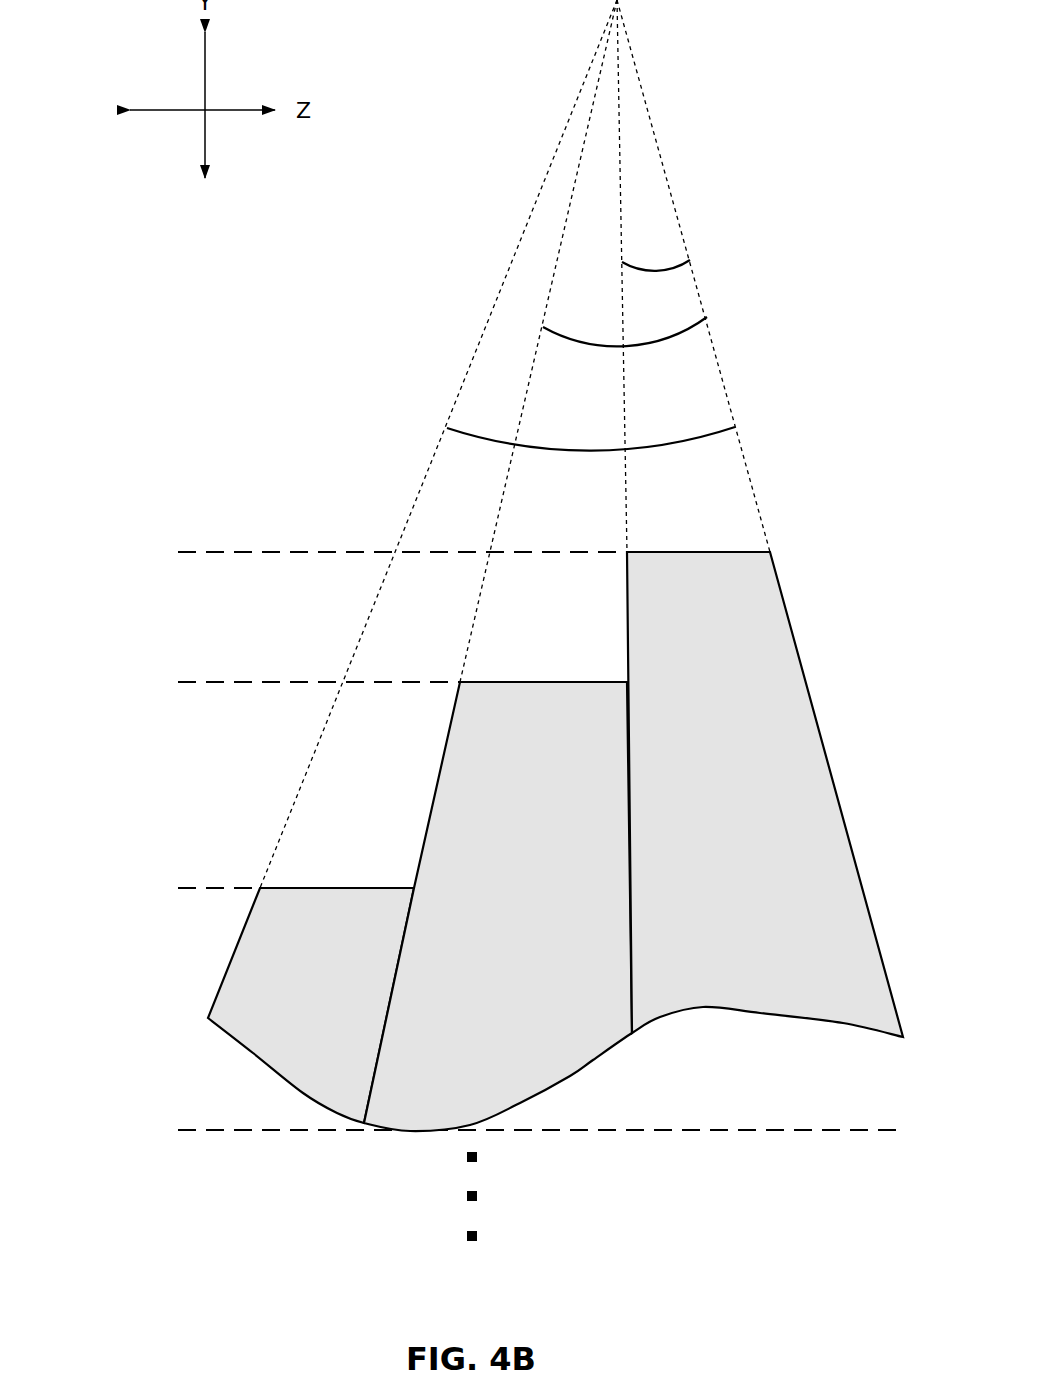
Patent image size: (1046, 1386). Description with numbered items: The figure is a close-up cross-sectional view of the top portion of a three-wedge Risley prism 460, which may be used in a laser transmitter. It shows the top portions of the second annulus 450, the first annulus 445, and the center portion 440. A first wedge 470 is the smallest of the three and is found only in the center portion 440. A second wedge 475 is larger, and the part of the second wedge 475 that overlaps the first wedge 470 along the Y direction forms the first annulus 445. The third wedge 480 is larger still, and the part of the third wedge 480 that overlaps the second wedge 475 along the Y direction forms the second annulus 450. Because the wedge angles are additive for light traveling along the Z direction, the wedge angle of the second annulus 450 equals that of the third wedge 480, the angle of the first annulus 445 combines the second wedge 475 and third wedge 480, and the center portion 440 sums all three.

The center portion 440 is at (476, 1009).
The first annulus 445 is at (410, 813).
The second annulus 450 is at (323, 654).
The three-wedge Risley prism 460 is at (440, 444).
The first wedge 470 is at (311, 953).
The second wedge 475 is at (498, 851).
The third wedge 480 is at (765, 748).